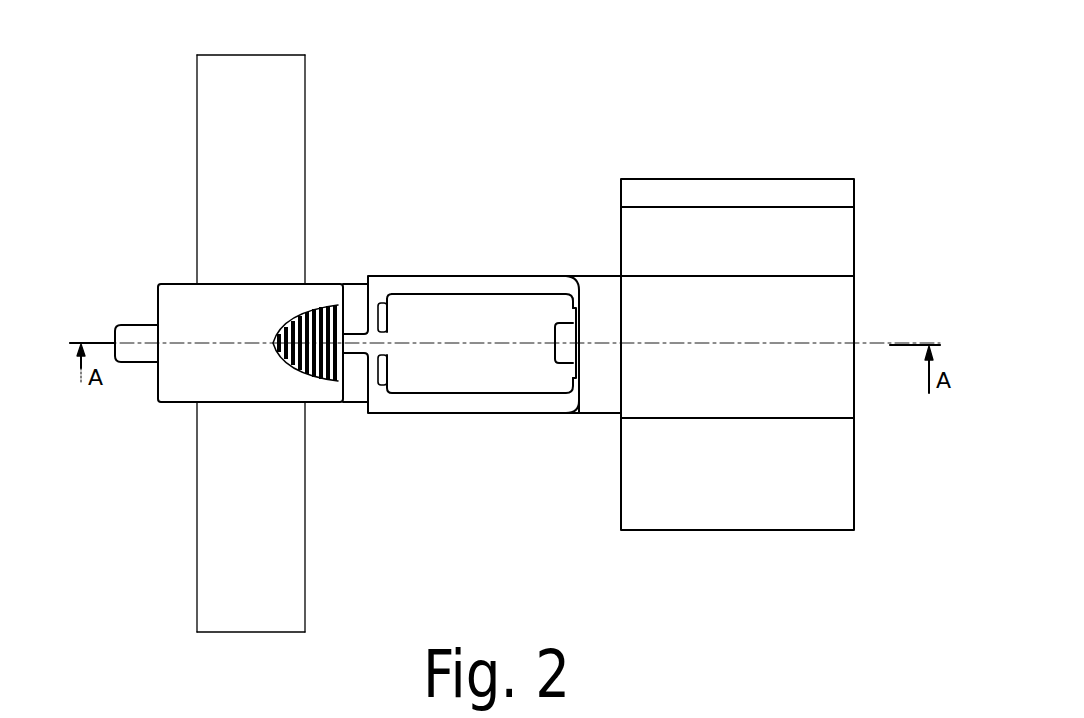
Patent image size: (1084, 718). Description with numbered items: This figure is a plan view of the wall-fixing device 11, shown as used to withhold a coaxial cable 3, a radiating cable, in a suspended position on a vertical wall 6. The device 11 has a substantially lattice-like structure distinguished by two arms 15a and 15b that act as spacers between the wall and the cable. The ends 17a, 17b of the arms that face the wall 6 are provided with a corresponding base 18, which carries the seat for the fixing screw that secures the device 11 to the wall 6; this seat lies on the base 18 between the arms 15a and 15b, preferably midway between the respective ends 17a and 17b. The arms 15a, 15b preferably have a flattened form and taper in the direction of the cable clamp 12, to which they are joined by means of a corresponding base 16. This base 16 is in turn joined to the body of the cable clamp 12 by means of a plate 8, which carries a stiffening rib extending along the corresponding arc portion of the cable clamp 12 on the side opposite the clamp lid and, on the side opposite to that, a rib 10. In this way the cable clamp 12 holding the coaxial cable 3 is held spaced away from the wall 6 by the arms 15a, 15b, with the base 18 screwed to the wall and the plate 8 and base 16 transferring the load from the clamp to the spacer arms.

The coaxial cable 3 is at (248, 595).
The vertical wall 6 is at (832, 239).
The plate 8 is at (355, 383).
The rib 10 is at (355, 338).
The device 11 is at (462, 110).
The cable clamp 12 is at (207, 390).
The first arm 15a is at (472, 280).
The second arm 15b is at (505, 405).
The base 16 is at (375, 398).
The end of first arm 17a is at (568, 284).
The end of second arm 17b is at (572, 405).
The base 18 is at (603, 327).